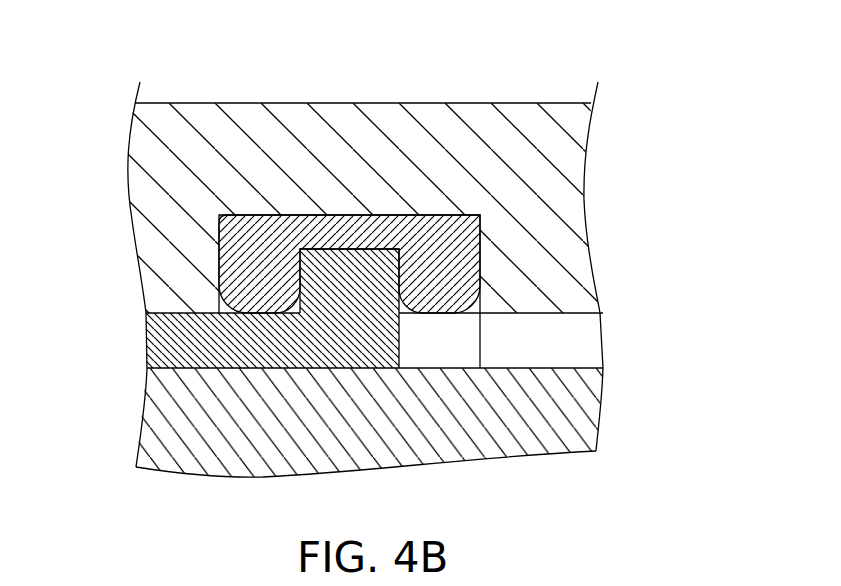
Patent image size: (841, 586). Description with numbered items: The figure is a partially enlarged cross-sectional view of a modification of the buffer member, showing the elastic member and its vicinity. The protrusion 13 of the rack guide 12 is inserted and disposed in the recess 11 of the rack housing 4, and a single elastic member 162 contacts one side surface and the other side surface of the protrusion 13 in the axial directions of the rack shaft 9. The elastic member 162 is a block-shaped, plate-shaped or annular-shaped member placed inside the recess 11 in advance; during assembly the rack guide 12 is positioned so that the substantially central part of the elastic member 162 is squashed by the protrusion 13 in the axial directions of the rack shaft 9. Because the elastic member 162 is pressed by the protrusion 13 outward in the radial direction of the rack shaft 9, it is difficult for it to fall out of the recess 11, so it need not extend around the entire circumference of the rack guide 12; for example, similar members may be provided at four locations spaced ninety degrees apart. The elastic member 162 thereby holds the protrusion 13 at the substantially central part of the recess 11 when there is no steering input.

The rack housing 4 is at (570, 196).
The rack shaft 9 is at (570, 412).
The recess 11 is at (470, 313).
The rack guide 12 is at (158, 353).
The protrusion 13 is at (343, 278).
The elastic member 162 is at (430, 270).